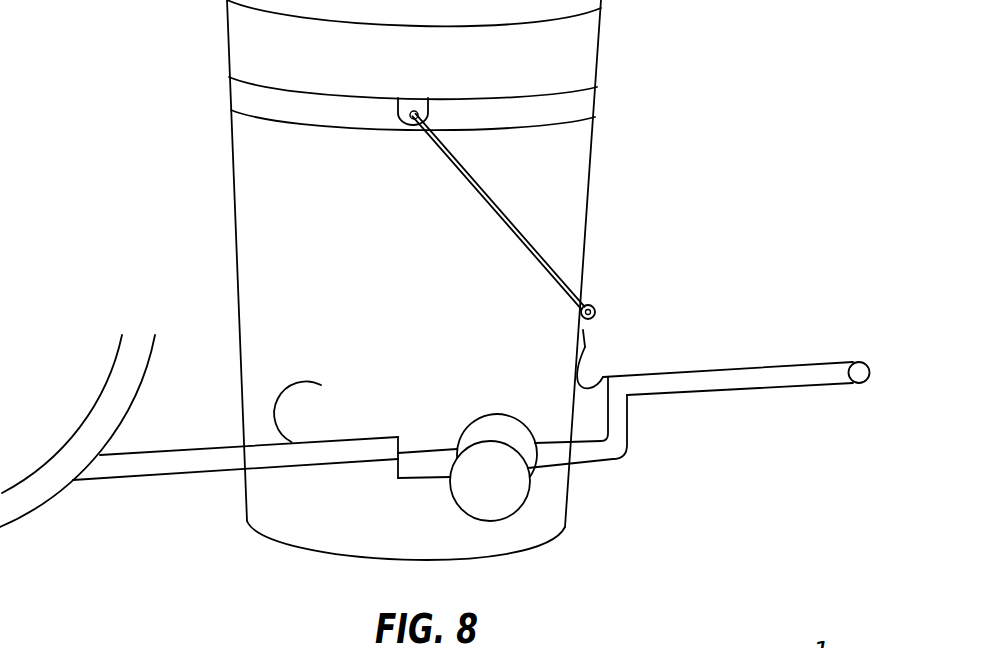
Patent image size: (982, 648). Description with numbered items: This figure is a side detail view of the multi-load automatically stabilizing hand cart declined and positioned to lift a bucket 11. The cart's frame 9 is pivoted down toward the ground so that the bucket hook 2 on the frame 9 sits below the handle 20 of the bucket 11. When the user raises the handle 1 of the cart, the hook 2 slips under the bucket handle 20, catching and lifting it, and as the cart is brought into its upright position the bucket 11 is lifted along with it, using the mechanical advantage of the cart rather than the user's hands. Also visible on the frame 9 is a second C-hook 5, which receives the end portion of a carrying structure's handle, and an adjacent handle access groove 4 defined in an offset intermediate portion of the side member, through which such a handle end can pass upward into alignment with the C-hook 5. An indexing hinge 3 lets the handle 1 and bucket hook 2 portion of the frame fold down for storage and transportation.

The handle 1 is at (824, 362).
The bucket hook 2 is at (586, 352).
The indexing hinge 3 is at (502, 483).
The handle access groove 4 is at (394, 462).
The second C-hook 5 is at (270, 404).
The frame 9 is at (198, 458).
The bucket 11 is at (592, 57).
The handle of the bucket 20 is at (523, 245).